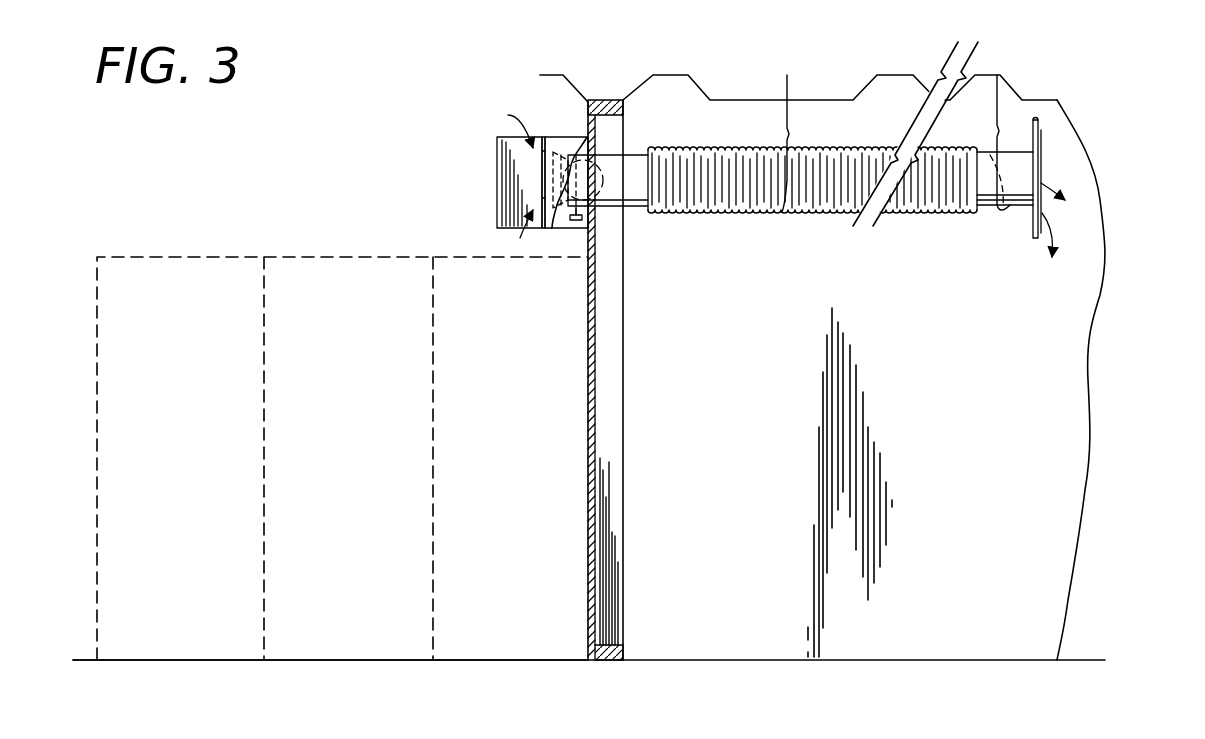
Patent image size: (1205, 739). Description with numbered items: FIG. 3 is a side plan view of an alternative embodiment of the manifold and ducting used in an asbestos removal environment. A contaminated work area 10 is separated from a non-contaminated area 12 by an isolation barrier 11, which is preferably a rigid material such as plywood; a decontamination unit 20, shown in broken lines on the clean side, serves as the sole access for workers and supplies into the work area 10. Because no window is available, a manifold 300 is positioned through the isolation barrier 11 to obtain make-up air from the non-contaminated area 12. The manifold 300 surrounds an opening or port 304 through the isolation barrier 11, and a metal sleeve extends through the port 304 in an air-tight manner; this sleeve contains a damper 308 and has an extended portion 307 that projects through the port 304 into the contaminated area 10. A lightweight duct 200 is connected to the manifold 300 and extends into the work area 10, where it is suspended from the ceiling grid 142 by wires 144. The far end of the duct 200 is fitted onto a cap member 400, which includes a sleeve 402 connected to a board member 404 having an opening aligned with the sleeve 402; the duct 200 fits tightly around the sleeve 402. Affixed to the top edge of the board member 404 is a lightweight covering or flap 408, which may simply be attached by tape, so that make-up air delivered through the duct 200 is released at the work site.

The contaminated work area 10 is at (716, 603).
The isolation barrier 11 is at (612, 403).
The non-contaminated area 12 is at (254, 227).
The decontamination unit 20 is at (199, 351).
The ceiling grid 142 is at (830, 99).
The wires 144 is at (800, 100).
The duct 200 is at (820, 213).
The manifold 300 is at (542, 121).
The port 304 is at (593, 160).
The extended portion 307 is at (642, 160).
The damper 308 is at (588, 190).
The cap member 400 is at (998, 209).
The sleeve 402 is at (1036, 152).
The board member 404 is at (1033, 240).
The flap 408 is at (1048, 180).